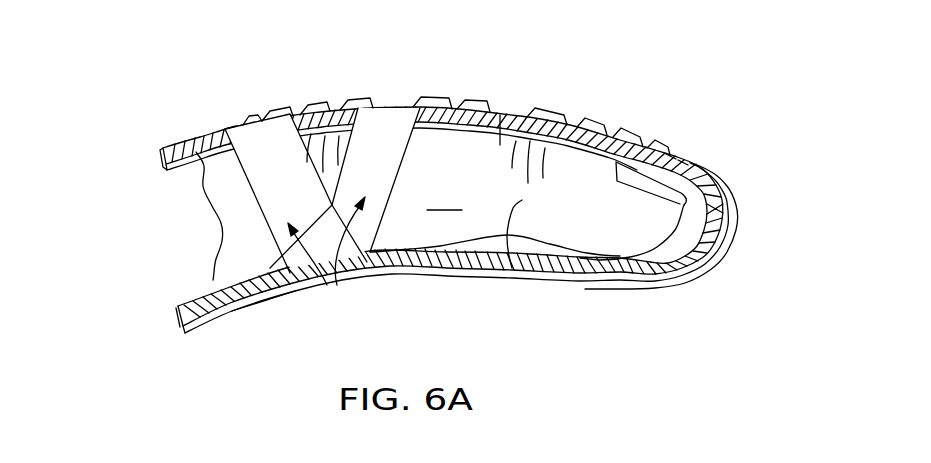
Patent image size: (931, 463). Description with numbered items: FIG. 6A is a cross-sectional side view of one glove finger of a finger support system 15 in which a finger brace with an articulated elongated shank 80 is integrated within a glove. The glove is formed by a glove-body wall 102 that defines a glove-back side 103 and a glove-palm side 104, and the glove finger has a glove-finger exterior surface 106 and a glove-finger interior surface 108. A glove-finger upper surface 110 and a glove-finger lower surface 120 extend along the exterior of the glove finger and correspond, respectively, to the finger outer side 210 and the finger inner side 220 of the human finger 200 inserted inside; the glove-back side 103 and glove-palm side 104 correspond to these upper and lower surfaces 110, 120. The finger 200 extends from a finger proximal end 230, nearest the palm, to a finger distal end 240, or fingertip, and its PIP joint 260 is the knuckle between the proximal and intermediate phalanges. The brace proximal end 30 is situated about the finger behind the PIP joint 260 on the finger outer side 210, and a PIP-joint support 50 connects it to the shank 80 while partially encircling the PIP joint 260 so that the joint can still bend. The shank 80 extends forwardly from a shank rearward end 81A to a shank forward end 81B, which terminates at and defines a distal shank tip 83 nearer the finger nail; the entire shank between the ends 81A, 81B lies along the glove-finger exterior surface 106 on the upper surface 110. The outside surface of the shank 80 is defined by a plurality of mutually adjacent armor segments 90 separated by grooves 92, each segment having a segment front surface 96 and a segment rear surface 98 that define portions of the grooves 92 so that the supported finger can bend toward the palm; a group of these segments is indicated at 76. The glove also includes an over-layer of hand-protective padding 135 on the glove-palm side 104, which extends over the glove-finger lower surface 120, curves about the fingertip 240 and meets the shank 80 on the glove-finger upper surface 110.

The finger support system 15 is at (671, 82).
The brace proximal end 30 is at (238, 133).
The PIP-joint support 50 is at (340, 293).
The heel region 76 is at (674, 142).
The elongated shank 80 is at (688, 142).
The shank rearward end 81A is at (232, 117).
The shank forward end 81B is at (670, 153).
The distal shank tip 83 is at (680, 160).
The armor segments 90 is at (434, 98).
The grooves 92 is at (527, 116).
The segment front surface 96 is at (450, 109).
The segment rear surface 98 is at (417, 106).
The glove-body wall 102 is at (168, 156).
The glove-back side 103 is at (193, 142).
The glove-palm side 104 is at (194, 314).
The glove-finger exterior surface 106 is at (177, 148).
The glove-finger interior surface 108 is at (183, 162).
The glove-finger upper surface 110 is at (200, 147).
The glove-finger lower surface 120 is at (217, 307).
The hand-protective padding 135 is at (267, 304).
The human finger 200 is at (495, 220).
The finger outer side 210 is at (500, 115).
The finger inner side 220 is at (512, 268).
The finger proximal end 230 is at (220, 241).
The finger distal end 240 is at (640, 228).
The PIP joint 260 is at (321, 112).